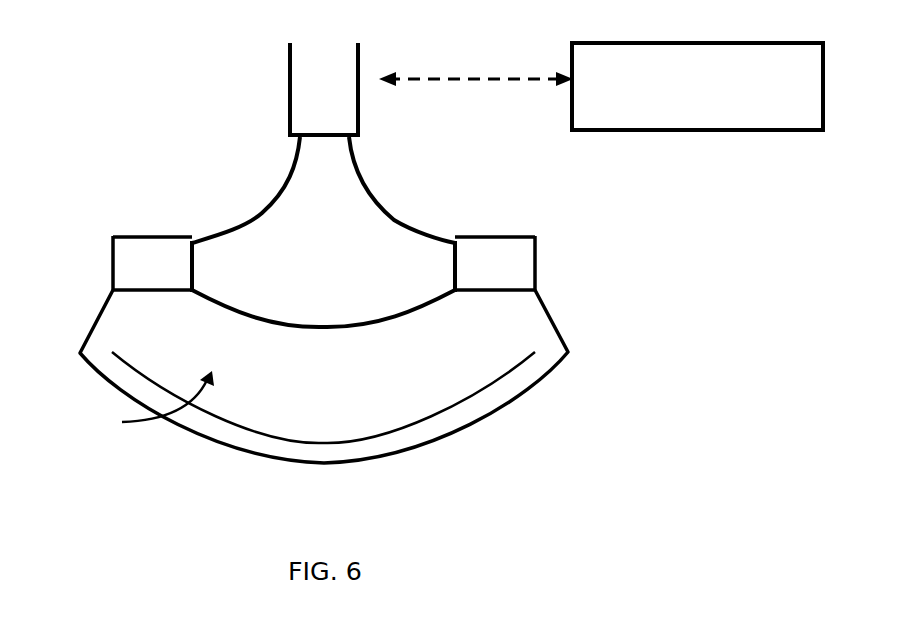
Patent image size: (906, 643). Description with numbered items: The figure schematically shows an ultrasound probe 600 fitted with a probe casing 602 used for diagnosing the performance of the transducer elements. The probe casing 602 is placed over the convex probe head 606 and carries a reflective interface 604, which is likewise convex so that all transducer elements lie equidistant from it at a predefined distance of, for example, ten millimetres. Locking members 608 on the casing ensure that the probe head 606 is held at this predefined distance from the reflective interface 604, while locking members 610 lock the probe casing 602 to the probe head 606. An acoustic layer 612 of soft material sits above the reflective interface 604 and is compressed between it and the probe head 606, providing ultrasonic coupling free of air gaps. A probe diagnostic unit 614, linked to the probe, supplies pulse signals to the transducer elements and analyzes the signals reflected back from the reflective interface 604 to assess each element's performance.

The ultrasound probe 600 is at (240, 160).
The probe casing 602 is at (578, 334).
The reflective interface 604 is at (523, 377).
The probe head 606 is at (412, 258).
The locking members 608 is at (536, 237).
The locking members 610 is at (543, 283).
The acoustic layer 612 is at (142, 404).
The probe diagnostic unit 614 is at (601, 86).